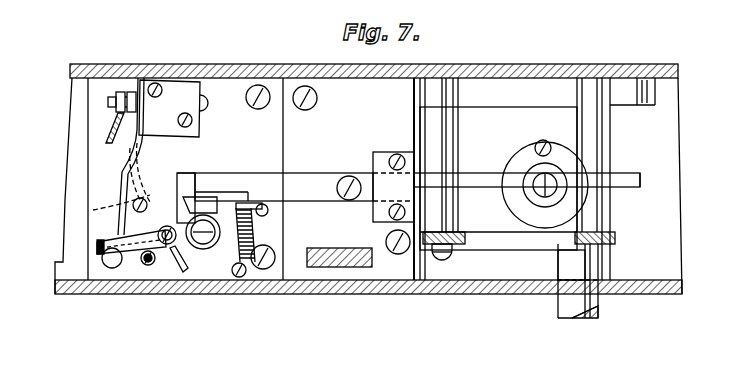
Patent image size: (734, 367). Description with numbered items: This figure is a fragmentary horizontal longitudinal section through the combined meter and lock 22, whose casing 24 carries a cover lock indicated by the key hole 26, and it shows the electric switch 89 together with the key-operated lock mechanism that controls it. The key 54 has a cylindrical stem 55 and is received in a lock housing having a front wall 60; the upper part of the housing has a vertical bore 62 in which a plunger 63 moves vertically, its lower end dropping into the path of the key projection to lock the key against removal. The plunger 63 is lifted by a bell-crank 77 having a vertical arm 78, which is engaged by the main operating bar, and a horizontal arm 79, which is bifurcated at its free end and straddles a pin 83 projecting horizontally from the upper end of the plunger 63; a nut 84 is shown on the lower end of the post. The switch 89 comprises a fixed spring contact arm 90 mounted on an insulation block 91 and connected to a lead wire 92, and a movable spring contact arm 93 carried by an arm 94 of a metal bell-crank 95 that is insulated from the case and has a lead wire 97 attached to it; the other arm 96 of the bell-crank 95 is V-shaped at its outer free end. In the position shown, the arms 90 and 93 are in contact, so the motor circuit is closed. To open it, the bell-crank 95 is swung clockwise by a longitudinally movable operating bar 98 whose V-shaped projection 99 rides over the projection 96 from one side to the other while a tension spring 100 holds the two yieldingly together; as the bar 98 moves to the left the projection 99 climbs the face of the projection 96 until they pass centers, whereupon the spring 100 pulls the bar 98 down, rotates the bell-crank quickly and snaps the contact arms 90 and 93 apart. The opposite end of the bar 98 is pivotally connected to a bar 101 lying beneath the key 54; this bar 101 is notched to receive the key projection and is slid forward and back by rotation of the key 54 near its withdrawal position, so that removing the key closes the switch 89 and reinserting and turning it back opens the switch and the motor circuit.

The combined meter and lock 22 is at (650, 63).
The casing 24 is at (258, 52).
The key hole 26 is at (338, 268).
The key 54 is at (556, 298).
The cylindrical stem 55 is at (592, 312).
The front wall 60 is at (496, 250).
The vertical bore 62 is at (536, 196).
The plunger 63 is at (548, 198).
The bell-crank 77 is at (446, 266).
The vertical arm 78 is at (428, 250).
The horizontal arm 79 is at (474, 175).
The pin 83 is at (600, 148).
The nut 84 is at (614, 236).
The switch 89 is at (181, 174).
The fixed spring contact arm 90 is at (122, 158).
The insulation block 91 is at (164, 128).
The lead wire 92 is at (117, 130).
The movable spring contact arm 93 is at (116, 212).
The arm 94 is at (134, 170).
The bell-crank 95 is at (170, 224).
The arm 96 is at (197, 212).
The lead wire 97 is at (180, 270).
The operating bar 98 is at (312, 182).
The V-shaped projection 99 is at (217, 208).
The tension spring 100 is at (252, 232).
The bar 101 is at (634, 182).